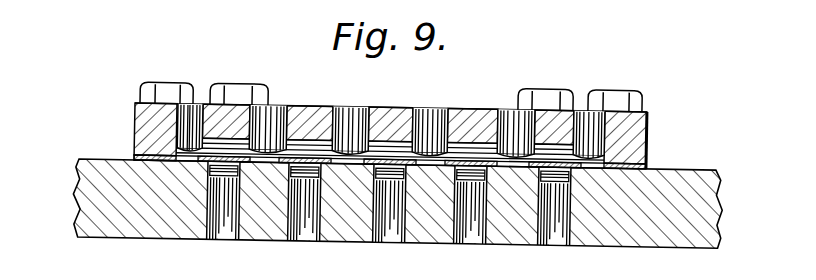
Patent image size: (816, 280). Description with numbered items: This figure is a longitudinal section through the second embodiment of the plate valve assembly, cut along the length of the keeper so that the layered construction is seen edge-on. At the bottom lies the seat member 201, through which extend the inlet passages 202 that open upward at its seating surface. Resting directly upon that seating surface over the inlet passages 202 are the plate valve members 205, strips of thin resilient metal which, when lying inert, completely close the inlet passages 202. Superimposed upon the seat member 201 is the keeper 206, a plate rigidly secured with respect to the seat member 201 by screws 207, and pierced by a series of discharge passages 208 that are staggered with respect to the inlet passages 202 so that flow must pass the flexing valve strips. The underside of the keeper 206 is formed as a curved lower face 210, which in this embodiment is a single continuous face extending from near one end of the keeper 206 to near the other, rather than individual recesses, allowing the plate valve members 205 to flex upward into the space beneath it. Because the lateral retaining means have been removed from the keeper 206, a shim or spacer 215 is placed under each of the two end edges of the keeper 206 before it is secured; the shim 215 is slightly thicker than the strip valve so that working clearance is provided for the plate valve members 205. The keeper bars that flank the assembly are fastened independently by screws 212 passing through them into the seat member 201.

The seat member 201 is at (97, 186).
The inlet passages 202 is at (307, 240).
The plate valve members 205 is at (247, 158).
The keeper 206 is at (390, 103).
The screws 207 is at (148, 90).
The discharge passages 208 is at (195, 111).
The curved lower face of the keeper 210 is at (399, 145).
The screws 212 is at (217, 89).
The shim or spacer 215 is at (136, 156).